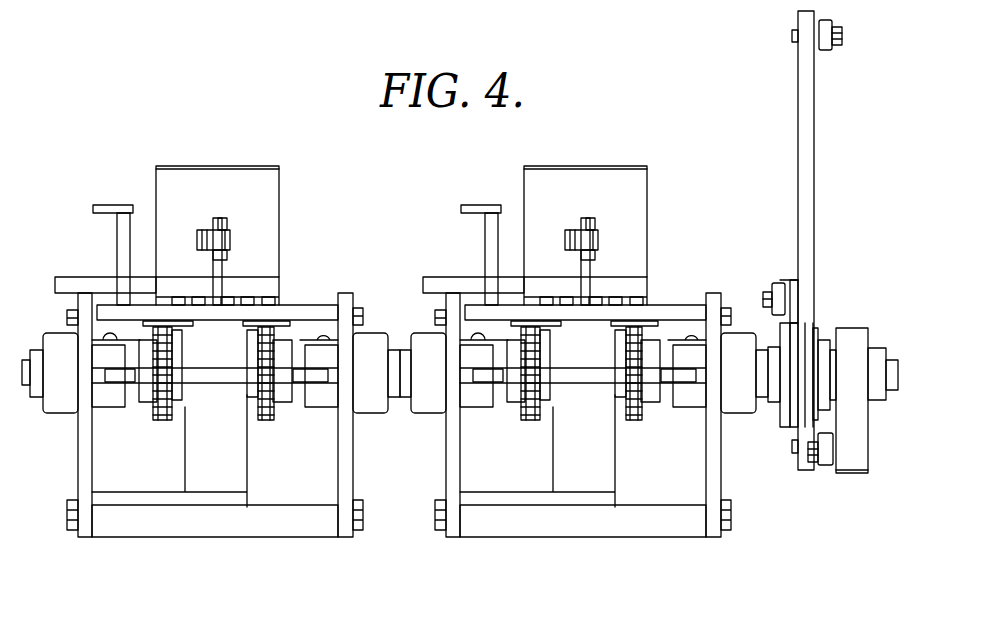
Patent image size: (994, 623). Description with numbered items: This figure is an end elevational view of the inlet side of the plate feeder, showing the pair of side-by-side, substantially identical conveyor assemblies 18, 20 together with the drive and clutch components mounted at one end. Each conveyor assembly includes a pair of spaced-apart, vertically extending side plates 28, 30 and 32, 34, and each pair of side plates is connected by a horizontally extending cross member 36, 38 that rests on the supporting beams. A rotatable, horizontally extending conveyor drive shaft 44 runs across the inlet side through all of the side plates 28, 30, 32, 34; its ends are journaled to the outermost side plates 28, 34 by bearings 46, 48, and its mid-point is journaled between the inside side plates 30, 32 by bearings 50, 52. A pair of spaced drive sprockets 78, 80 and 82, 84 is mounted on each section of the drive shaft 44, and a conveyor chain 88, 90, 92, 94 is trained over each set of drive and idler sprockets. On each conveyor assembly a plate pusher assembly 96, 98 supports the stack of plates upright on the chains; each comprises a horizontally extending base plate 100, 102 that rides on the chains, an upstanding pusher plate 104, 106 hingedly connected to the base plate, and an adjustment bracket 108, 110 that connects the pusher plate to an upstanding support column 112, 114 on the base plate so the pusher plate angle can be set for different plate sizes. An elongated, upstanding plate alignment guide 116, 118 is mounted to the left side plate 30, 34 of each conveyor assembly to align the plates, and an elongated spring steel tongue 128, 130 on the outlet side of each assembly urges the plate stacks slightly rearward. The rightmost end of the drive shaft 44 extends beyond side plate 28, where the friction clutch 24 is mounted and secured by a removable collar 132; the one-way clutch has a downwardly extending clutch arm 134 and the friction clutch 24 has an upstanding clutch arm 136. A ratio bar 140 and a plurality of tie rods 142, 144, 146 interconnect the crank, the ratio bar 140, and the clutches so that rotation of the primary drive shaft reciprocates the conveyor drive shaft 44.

The conveyor assembly 18 is at (584, 312).
The conveyor assembly 20 is at (237, 112).
The friction clutch 24 is at (783, 417).
The side plate 28 is at (734, 434).
The side plate 30 is at (430, 415).
The side plate 32 is at (350, 497).
The side plate 34 is at (82, 482).
The cross member 36 is at (583, 545).
The cross member 38 is at (172, 532).
The conveyor drive shaft 44 is at (223, 383).
The bearing 46 is at (744, 402).
The bearing 48 is at (63, 403).
The bearing 50 is at (423, 400).
The bearing 52 is at (372, 337).
The drive sprocket 78 is at (668, 394).
The drive sprocket 80 is at (496, 395).
The drive sprocket 82 is at (280, 403).
The drive sprocket 84 is at (145, 403).
The conveyor chain 88 is at (644, 404).
The conveyor chain 90 is at (530, 407).
The conveyor chain 92 is at (262, 412).
The conveyor chain 94 is at (158, 420).
The plate pusher assembly 96 is at (599, 209).
The plate pusher assembly 98 is at (293, 164).
The base plate 100 is at (585, 280).
The base plate 102 is at (306, 313).
The pusher plate 104 is at (577, 218).
The pusher plate 106 is at (220, 175).
The adjustment bracket 108 is at (575, 239).
The adjustment bracket 110 is at (242, 251).
The support column 112 is at (560, 251).
The support column 114 is at (212, 270).
The plate alignment guide 116 is at (461, 235).
The plate alignment guide 118 is at (125, 207).
The spring steel tongue 128 is at (572, 489).
The spring steel tongue 130 is at (237, 470).
The removable collar 132 is at (877, 353).
The clutch arm 134 is at (852, 465).
The clutch arm 136 is at (793, 280).
The ratio bar 140 is at (807, 130).
The tie rod 142 is at (825, 52).
The tie rod 144 is at (823, 463).
The tie rod 146 is at (778, 290).